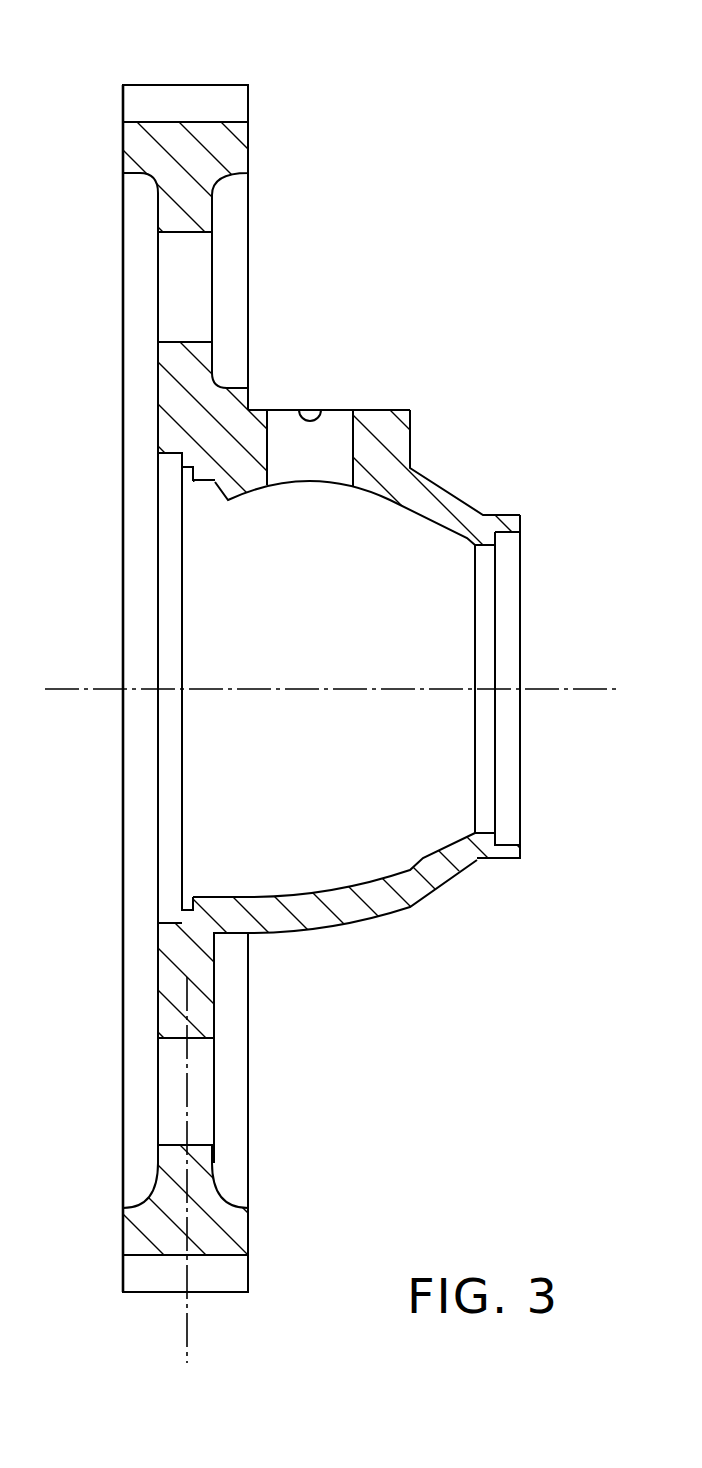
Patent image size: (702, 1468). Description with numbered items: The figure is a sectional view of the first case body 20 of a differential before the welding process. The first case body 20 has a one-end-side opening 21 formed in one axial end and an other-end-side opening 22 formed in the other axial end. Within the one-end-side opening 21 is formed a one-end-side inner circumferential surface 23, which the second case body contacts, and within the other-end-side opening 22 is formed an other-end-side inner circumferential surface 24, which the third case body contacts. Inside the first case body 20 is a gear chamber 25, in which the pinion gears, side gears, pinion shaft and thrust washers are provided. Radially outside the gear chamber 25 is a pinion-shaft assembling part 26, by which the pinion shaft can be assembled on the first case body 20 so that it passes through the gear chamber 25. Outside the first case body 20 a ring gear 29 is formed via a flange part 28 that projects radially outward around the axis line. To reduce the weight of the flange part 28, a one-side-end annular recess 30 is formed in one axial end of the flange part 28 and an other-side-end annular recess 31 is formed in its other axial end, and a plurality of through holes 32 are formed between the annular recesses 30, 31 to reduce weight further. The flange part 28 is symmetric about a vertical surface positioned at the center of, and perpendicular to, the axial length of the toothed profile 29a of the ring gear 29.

The first case body 20 is at (362, 237).
The one-end-side opening 21 is at (507, 534).
The other-end-side opening 22 is at (168, 455).
The one-end-side inner circumferential surface 23 is at (507, 845).
The other-end-side inner circumferential surface 24 is at (177, 920).
The gear chamber 25 is at (340, 888).
The pinion-shaft assembling part 26 is at (310, 410).
The flange part 28 is at (157, 216).
The ring gear 29 is at (152, 86).
The toothed profile 29a is at (152, 1293).
The one-side-end annular recess 30 is at (233, 1203).
The other-side-end annular recess 31 is at (141, 1203).
The through holes 32 is at (195, 340).